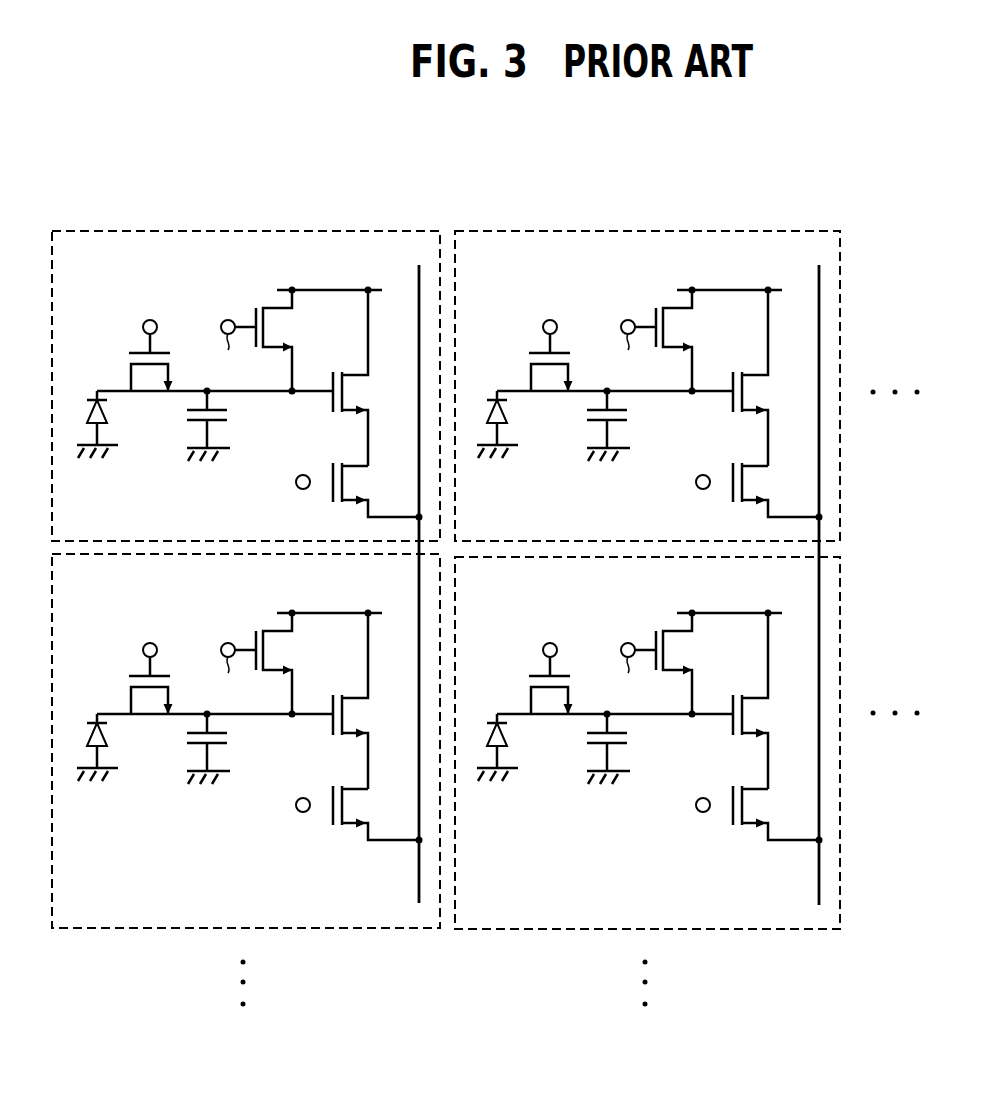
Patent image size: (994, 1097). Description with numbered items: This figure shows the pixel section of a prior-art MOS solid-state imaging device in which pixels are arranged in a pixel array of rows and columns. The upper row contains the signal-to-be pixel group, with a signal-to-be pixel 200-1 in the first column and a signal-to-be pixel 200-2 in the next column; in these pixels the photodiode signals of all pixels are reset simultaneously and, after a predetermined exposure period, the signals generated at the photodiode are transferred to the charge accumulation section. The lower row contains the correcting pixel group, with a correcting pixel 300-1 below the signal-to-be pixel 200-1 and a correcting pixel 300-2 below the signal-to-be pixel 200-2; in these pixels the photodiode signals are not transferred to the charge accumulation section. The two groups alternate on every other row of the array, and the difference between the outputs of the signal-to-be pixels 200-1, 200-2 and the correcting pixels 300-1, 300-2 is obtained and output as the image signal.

The signal-to-be pixel 200-1 is at (250, 231).
The signal-to-be pixel 200-2 is at (650, 231).
The correcting pixel 300-1 is at (98, 929).
The correcting pixel 300-2 is at (510, 930).